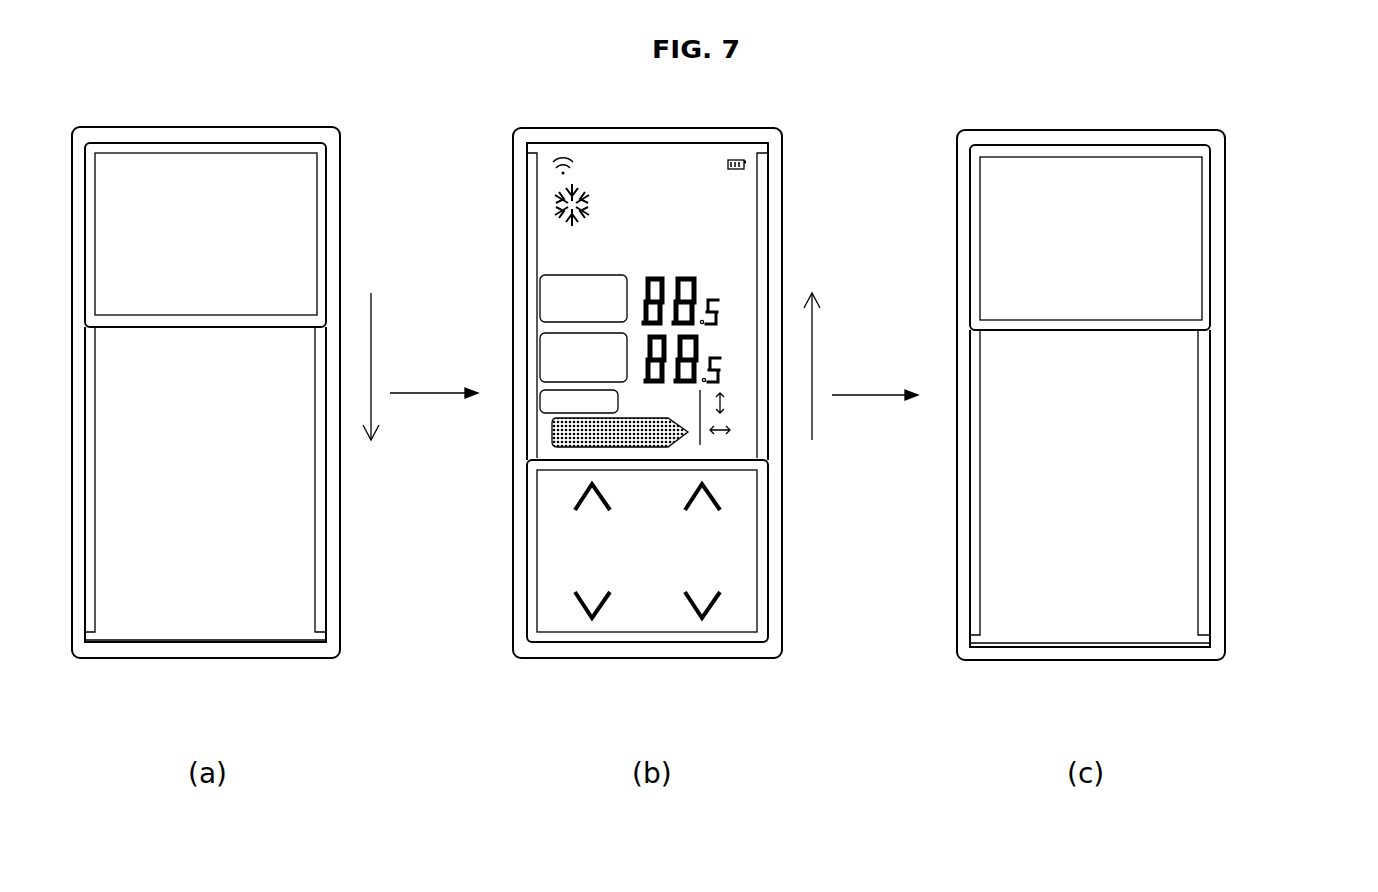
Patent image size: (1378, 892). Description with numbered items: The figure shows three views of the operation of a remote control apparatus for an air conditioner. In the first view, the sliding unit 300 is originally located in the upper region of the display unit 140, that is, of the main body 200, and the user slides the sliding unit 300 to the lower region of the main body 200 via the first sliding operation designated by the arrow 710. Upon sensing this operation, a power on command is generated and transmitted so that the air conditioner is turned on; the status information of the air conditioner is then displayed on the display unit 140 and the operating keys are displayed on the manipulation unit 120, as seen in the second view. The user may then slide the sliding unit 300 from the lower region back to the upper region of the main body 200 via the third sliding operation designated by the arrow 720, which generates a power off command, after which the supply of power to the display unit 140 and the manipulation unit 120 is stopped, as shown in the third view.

The manipulation unit 120 is at (290, 222).
The display unit 140 is at (275, 521).
The main body 200 is at (340, 466).
The sliding unit 300 is at (328, 171).
The arrow designating first sliding operation 710 is at (371, 332).
The arrow designating third sliding operation 720 is at (812, 333).